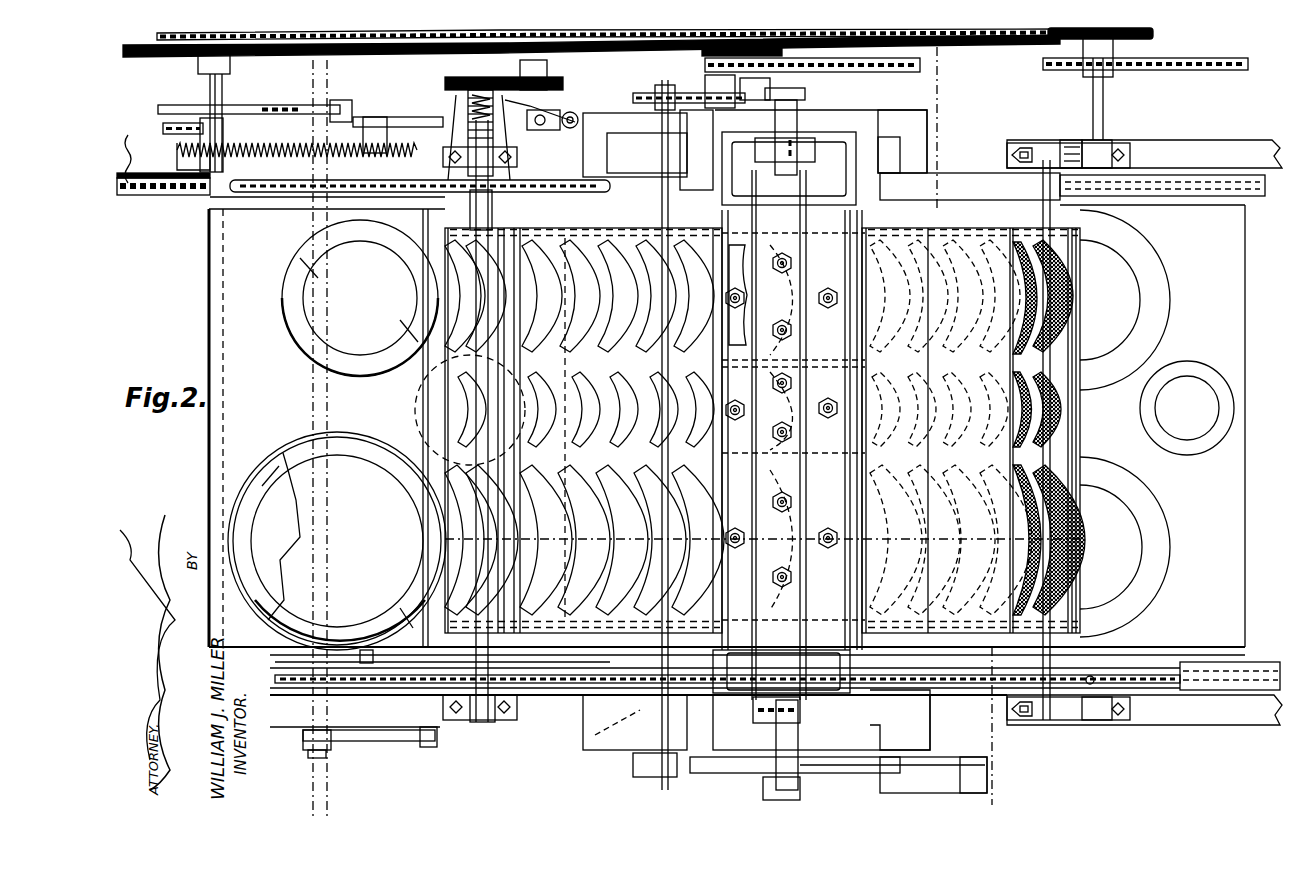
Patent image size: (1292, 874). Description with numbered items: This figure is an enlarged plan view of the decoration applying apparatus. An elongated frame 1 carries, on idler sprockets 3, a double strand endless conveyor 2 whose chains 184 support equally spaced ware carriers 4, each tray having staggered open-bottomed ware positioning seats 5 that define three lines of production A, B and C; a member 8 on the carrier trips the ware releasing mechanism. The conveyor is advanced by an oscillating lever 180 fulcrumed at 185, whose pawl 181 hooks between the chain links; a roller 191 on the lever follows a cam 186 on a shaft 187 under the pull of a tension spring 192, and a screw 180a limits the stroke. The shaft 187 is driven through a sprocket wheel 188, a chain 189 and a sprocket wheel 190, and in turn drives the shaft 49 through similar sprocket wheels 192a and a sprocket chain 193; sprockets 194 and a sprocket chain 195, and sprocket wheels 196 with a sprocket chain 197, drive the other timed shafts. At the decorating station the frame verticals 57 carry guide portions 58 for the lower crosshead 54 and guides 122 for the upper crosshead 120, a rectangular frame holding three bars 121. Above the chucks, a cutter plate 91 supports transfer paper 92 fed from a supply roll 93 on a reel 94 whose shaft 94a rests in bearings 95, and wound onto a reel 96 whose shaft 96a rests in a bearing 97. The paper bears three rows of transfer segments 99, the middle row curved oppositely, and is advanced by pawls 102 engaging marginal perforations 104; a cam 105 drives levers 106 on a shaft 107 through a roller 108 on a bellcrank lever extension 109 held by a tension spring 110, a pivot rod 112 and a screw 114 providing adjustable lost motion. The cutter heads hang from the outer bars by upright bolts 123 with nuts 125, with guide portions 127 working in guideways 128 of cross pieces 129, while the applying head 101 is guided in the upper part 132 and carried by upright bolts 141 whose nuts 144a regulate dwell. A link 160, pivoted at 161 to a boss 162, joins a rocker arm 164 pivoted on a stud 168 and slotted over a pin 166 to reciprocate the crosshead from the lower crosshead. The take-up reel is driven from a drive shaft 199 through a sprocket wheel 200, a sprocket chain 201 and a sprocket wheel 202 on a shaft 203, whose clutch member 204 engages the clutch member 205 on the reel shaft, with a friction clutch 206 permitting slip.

The frame 1 is at (128, 150).
The conveyor 2 is at (1250, 200).
The idler sprockets 3 is at (545, 518).
The ware carriers 4 is at (928, 48).
The ware positioning seats 5 is at (277, 470).
The member 8 is at (374, 650).
The shaft 49 is at (1104, 108).
The lower crosshead 54 is at (902, 655).
The frame verticals 57 is at (836, 126).
The guide portions 58 is at (610, 152).
The cutter plate 91 is at (888, 229).
The transfer paper 92 is at (946, 228).
The supply roll 93 is at (1040, 226).
The reel 94 is at (1084, 232).
The shaft 94a is at (1046, 148).
The bearings 95 is at (1014, 150).
The reel 96 is at (442, 157).
The shaft 96a is at (440, 262).
The bearing 97 is at (476, 708).
The transfer segments 99 is at (298, 252).
The applying head 101 is at (795, 265).
The pawls 102 is at (665, 232).
The marginal perforations 104 is at (562, 634).
The cam 105 is at (800, 92).
The levers 106 is at (660, 92).
The shaft 107 is at (592, 120).
The roller 108 is at (700, 96).
The bellcrank lever extension 109 is at (735, 150).
The tension spring 110 is at (706, 112).
The pivot rod 112 is at (655, 172).
The screw 114 is at (600, 186).
The crosshead 120 is at (970, 185).
The bars 121 is at (832, 660).
The guides 122 is at (797, 146).
The upright bolts 123 is at (828, 290).
The nut 125 is at (735, 530).
The guide portions 127 is at (718, 322).
The guideways 128 is at (682, 470).
The cross pieces 129 is at (700, 486).
The upper part of cutter head 132 is at (740, 348).
The upright bolts 141 is at (792, 330).
The nut 144a is at (792, 510).
The link 160 is at (920, 792).
The pivotal connection 161 is at (790, 166).
The boss 162 is at (760, 170).
The rocker arm 164 is at (815, 775).
The pin 166 is at (760, 780).
The stud 168 is at (860, 775).
The oscillating lever 180 is at (380, 120).
The screw 180a is at (174, 146).
The pawl 181 is at (372, 215).
The chains 184 is at (162, 197).
The fulcrum 185 is at (292, 228).
The cam 186 is at (265, 106).
The shaft 187 is at (212, 88).
The sprocket wheel 188 is at (296, 57).
The chain 189 is at (366, 57).
The sprocket wheel 190 is at (782, 49).
The roller 191 is at (350, 102).
The tension spring 192 is at (268, 143).
The sprocket wheels 192a is at (200, 60).
The sprocket chain 193 is at (850, 40).
The sprockets 194 is at (1062, 58).
The sprocket chain 195 is at (1205, 63).
The sprocket wheels 196 is at (818, 72).
The sprocket chain 197 is at (878, 72).
The drive shaft 199 is at (505, 140).
The sprocket wheel 200 is at (556, 82).
The sprocket chain 201 is at (522, 66).
The sprocket wheel 202 is at (455, 78).
The shaft 203 is at (455, 96).
The clutch member 204 is at (500, 186).
The clutch member 205 is at (362, 259).
The friction clutch 206 is at (576, 113).
The line of production A is at (1198, 540).
The line of production B is at (1198, 408).
The line of production C is at (1198, 297).